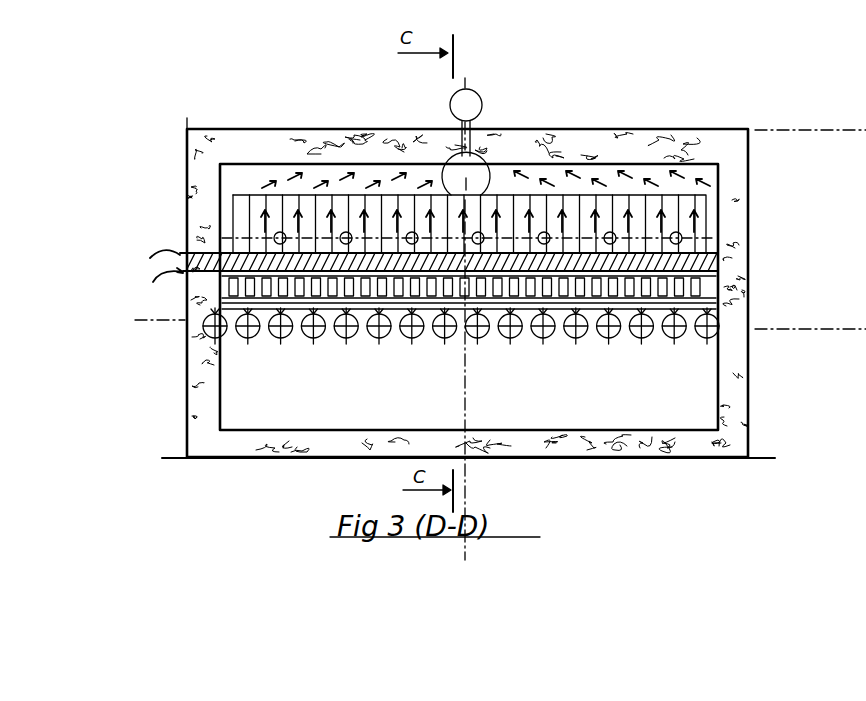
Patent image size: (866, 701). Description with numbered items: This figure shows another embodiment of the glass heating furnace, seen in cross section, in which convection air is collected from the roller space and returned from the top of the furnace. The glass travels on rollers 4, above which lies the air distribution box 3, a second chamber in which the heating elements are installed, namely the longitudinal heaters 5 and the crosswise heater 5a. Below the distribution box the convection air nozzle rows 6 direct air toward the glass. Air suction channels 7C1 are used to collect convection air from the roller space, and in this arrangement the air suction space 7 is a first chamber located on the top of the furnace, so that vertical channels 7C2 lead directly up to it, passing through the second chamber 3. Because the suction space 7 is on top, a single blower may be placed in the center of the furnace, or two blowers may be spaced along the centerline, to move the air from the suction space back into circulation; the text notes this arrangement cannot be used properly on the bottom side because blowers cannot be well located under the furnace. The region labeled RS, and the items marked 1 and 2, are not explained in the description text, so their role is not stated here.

The furnace housing 1 is at (585, 138).
The circulation fan 2 is at (480, 167).
The air distribution box 3 is at (313, 207).
The rollers 4 is at (745, 295).
The longitudinal heaters 5 is at (697, 267).
The crosswise heater 5a is at (683, 242).
The convection air nozzle rows 6 is at (700, 312).
The air suction space 7 is at (697, 173).
The air suction channel 7C1 is at (225, 248).
The vertical channels 7C2 is at (253, 197).
The radiant section RS is at (235, 332).